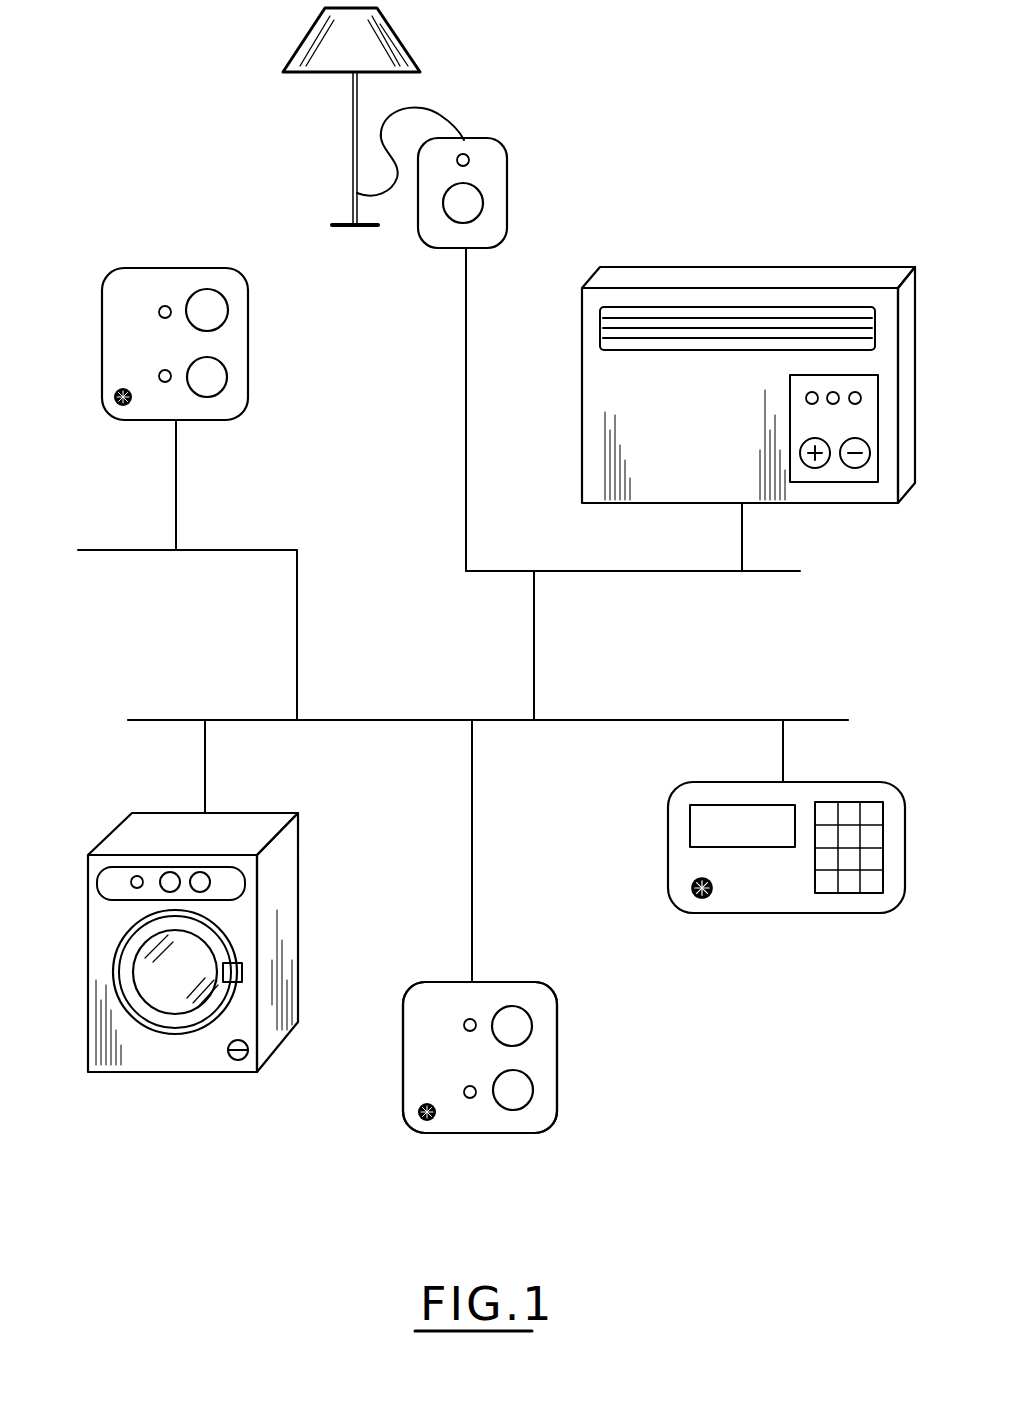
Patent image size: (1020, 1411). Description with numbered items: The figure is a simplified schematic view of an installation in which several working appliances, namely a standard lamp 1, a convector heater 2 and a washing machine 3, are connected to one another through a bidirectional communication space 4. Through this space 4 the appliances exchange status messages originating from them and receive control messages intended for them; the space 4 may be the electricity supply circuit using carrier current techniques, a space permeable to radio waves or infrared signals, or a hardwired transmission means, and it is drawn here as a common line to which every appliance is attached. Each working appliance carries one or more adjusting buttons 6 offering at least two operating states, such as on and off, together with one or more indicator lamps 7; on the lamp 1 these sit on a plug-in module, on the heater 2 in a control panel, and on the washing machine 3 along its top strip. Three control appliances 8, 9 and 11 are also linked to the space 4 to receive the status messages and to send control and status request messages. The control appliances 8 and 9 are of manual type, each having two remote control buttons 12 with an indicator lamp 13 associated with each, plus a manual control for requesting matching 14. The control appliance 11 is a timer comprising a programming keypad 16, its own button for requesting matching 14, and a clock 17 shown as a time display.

The standard lamp 1 is at (440, 90).
The convector heater 2 is at (612, 503).
The washing machine 3 is at (160, 812).
The bidirectional communication space 4 is at (383, 720).
The adjusting button 6 is at (450, 222).
The indicator lamp 7 is at (470, 157).
The control appliance 8 is at (248, 383).
The control appliance 9 is at (518, 982).
The control appliance 11 is at (668, 848).
The remote control button 12 is at (228, 310).
The indicator lamp 13 is at (158, 310).
The manual control for requesting matching 14 is at (128, 408).
The programming keypad 16 is at (850, 893).
The clock 17 is at (742, 802).